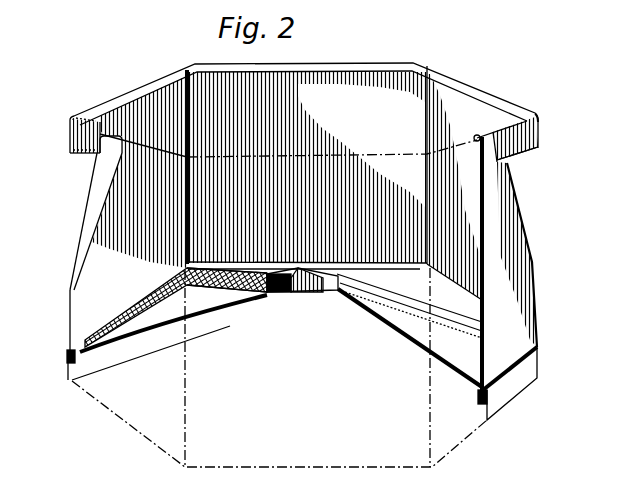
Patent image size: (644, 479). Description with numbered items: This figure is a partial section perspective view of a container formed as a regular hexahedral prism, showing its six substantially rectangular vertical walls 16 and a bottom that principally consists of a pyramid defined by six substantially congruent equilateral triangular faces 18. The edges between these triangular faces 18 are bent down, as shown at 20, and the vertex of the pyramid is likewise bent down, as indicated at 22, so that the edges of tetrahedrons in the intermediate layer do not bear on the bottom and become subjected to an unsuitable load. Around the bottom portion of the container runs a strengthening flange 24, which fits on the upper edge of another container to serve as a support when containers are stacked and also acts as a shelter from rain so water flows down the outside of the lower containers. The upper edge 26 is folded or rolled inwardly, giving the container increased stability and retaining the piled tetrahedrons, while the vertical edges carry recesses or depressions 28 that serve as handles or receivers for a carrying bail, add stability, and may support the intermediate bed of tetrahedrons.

The vertical wall 16 is at (335, 97).
The triangular face 18 is at (137, 302).
The bent-down edge 20 is at (247, 273).
The bent-down vertex 22 is at (302, 285).
The strengthening flange 24 is at (530, 372).
The upper edge fold 26 is at (80, 118).
The recess 28 is at (85, 152).